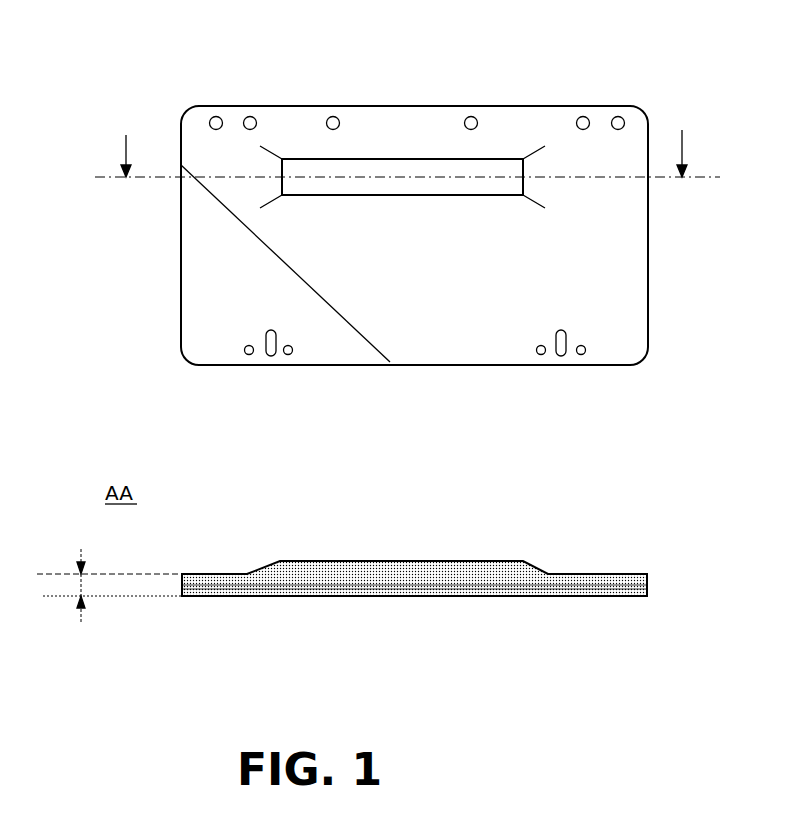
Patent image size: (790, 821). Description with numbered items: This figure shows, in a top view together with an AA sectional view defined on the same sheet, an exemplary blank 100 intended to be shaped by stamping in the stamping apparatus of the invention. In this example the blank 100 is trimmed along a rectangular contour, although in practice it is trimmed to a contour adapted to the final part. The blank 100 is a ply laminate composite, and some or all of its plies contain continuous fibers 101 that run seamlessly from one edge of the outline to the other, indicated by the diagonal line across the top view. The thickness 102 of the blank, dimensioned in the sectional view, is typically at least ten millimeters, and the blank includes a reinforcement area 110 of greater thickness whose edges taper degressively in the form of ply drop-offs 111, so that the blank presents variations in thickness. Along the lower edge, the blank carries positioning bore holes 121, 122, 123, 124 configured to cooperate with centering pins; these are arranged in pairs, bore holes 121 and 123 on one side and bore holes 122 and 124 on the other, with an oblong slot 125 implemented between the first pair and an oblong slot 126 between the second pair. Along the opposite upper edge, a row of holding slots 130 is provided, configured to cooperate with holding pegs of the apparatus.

The blank 100 is at (628, 82).
The continuous fibers 101 is at (282, 266).
The thickness 102 is at (78, 590).
The reinforcement area 110 is at (437, 195).
The ply drop-offs 111 is at (540, 573).
The positioning bore hole 121 is at (249, 355).
The positioning bore hole 122 is at (581, 355).
The positioning bore hole 123 is at (288, 355).
The positioning bore hole 124 is at (541, 355).
The oblong slot 125 is at (270, 356).
The oblong slot 126 is at (560, 356).
The holding slots 130 is at (618, 117).